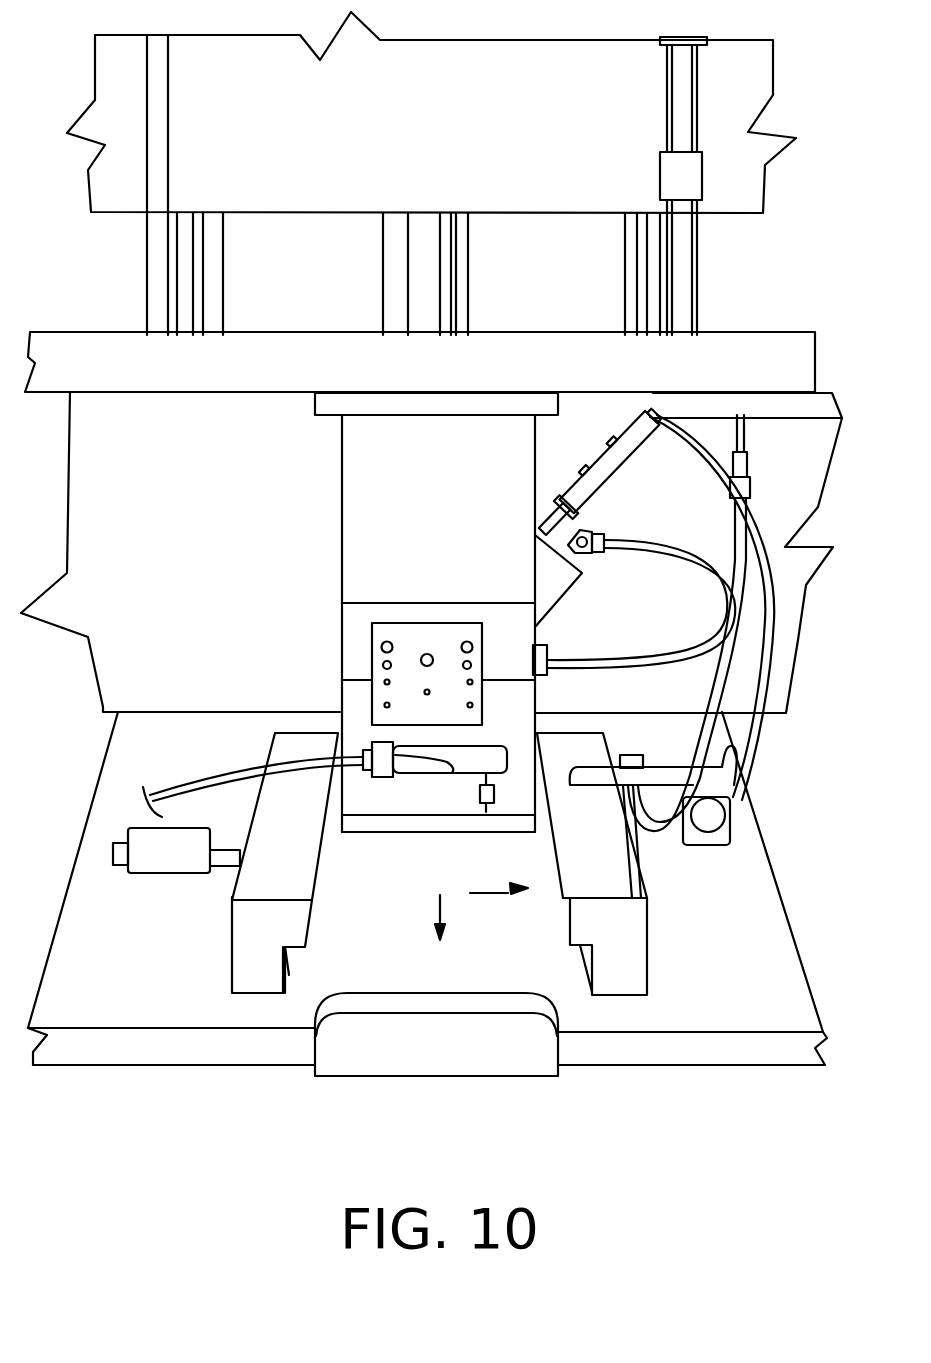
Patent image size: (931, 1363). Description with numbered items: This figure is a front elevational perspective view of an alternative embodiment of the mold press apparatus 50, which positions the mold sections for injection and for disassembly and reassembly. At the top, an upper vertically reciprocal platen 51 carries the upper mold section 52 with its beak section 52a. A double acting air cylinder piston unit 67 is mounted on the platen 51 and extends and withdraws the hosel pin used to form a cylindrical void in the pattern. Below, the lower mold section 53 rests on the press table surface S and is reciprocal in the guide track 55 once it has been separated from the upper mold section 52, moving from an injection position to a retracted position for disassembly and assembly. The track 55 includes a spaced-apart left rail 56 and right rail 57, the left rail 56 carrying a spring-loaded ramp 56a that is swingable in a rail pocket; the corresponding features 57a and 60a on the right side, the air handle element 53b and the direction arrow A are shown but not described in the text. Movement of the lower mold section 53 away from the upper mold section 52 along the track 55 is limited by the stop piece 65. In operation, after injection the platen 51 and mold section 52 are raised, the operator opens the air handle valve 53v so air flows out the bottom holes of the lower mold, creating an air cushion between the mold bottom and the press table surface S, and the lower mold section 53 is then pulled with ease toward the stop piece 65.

The mold press apparatus 50 is at (745, 300).
The upper vertically reciprocal platen 51 is at (225, 542).
The upper mold section 52 is at (358, 640).
The beak section 52a is at (437, 630).
The lower mold section 53 is at (523, 725).
The air handle valve 53v is at (415, 772).
The nozzle of tool head 53b is at (467, 772).
The guide track 55 is at (470, 893).
The working direction arrow A is at (437, 914).
The left rail 56 is at (272, 957).
The spring-loaded ramp 56a is at (312, 880).
The right rail 57 is at (631, 957).
The guide groove of right block 57a is at (562, 898).
The holding arm with guide post 60a is at (615, 907).
The stop piece 65 is at (451, 1062).
The double acting air cylinder piston unit 67 is at (640, 490).
The press table surface S is at (100, 1007).